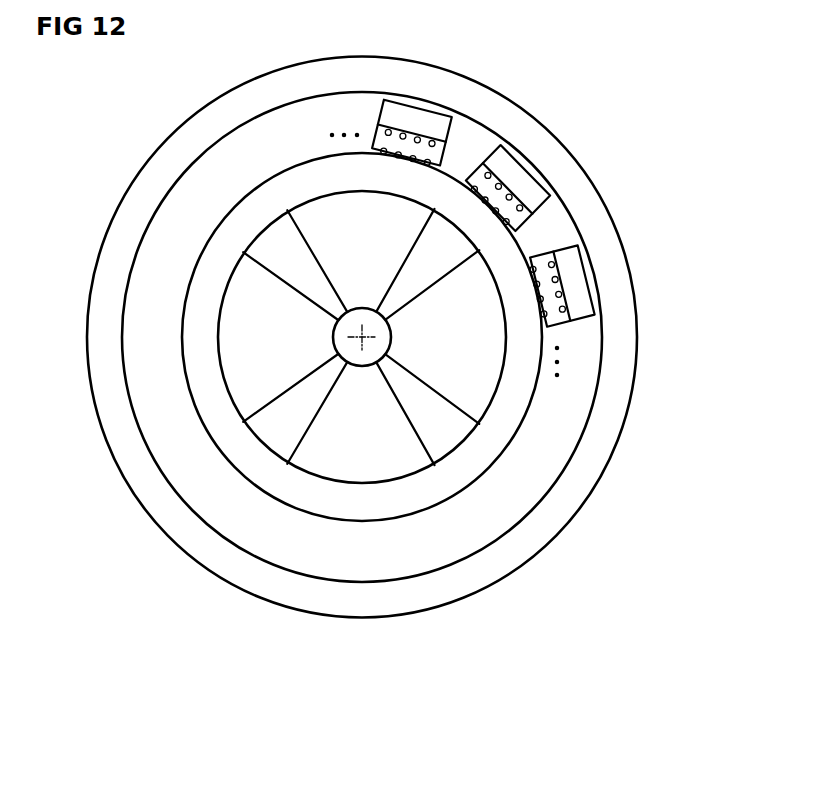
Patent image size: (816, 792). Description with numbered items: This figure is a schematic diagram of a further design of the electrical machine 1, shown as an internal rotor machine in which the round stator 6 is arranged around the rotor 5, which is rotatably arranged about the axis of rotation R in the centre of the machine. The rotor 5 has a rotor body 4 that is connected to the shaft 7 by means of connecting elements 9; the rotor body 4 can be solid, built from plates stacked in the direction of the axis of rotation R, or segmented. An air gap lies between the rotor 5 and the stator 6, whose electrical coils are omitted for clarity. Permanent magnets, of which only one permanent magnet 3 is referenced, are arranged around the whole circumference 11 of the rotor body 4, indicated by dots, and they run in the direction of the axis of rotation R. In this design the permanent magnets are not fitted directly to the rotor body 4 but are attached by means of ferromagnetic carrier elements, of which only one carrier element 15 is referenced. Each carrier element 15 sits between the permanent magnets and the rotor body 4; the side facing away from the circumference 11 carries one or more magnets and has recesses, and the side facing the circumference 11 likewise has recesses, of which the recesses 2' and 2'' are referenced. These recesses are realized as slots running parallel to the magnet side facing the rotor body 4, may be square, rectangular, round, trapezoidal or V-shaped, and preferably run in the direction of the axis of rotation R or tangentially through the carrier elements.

The electrical machine 1 is at (600, 118).
The recess 2' is at (442, 82).
The recess 2'' is at (386, 199).
The permanent magnet 3 is at (397, 120).
The rotor body 4 is at (510, 418).
The rotor 5 is at (416, 287).
The stator 6 is at (613, 362).
The shaft 7 is at (371, 337).
The connecting elements 9 is at (310, 291).
The circumference 11 is at (498, 460).
The carrier element 15 is at (447, 157).
The axis of rotation R is at (358, 338).